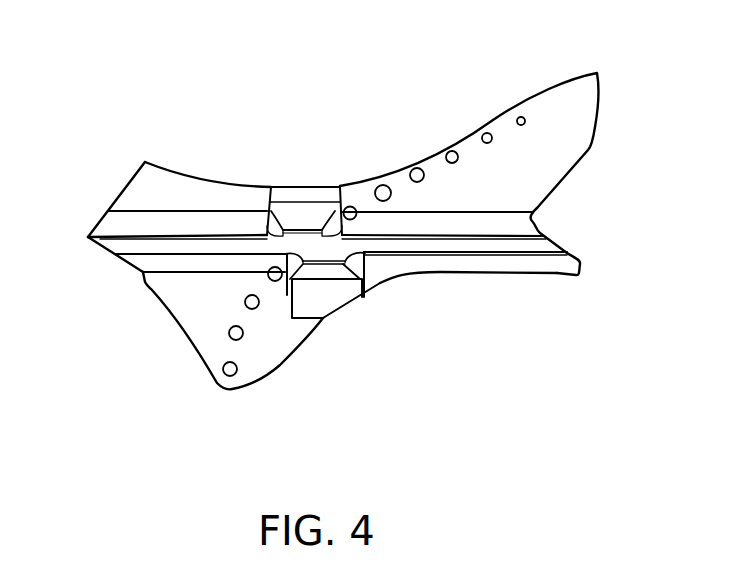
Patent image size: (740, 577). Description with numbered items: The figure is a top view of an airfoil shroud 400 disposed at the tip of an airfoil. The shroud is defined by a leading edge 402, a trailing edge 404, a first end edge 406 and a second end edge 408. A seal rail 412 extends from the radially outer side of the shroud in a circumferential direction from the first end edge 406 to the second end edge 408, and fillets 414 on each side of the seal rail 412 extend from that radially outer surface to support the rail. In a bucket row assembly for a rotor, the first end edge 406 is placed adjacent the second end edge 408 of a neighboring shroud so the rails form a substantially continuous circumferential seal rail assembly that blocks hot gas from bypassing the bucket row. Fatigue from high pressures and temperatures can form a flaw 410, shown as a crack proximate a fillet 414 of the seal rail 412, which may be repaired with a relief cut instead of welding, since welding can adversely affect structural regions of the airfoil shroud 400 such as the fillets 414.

The airfoil shroud 400 is at (158, 63).
The leading edge 402 is at (263, 383).
The trailing edge 404 is at (600, 100).
The first end edge 406 is at (568, 183).
The second end edge 408 is at (107, 262).
The flaw 410 is at (533, 202).
The seal rail 412 is at (390, 245).
The fillets 414 is at (477, 227).